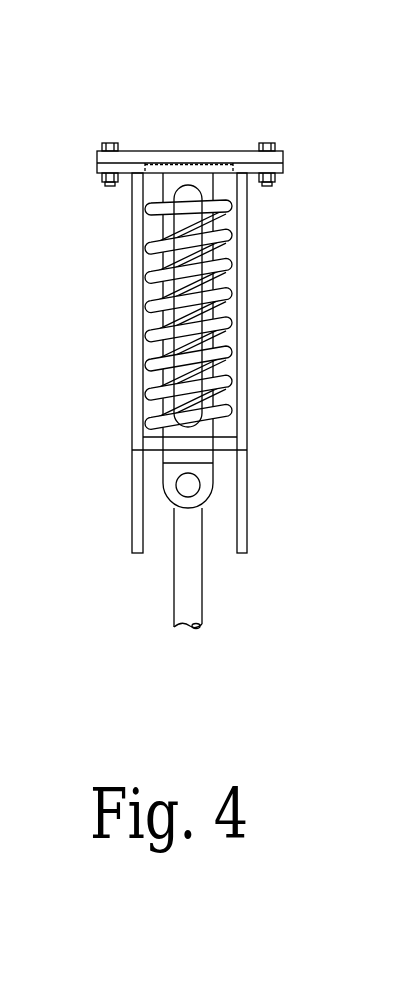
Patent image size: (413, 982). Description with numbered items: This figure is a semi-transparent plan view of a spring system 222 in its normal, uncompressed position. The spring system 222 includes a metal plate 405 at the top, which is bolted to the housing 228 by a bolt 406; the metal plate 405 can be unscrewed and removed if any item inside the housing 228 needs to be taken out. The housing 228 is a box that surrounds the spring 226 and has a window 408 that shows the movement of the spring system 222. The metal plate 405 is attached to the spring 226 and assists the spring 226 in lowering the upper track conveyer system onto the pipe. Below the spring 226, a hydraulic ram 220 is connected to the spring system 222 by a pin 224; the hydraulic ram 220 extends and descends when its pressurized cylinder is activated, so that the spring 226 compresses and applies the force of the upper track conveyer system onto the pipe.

The spring system 222 is at (203, 109).
The metal plate 405 is at (142, 150).
The bolt 406 is at (273, 143).
The window 408 is at (203, 192).
The housing 228 is at (143, 293).
The spring 226 is at (213, 330).
The pin 224 is at (189, 485).
The hydraulic ram 220 is at (188, 598).